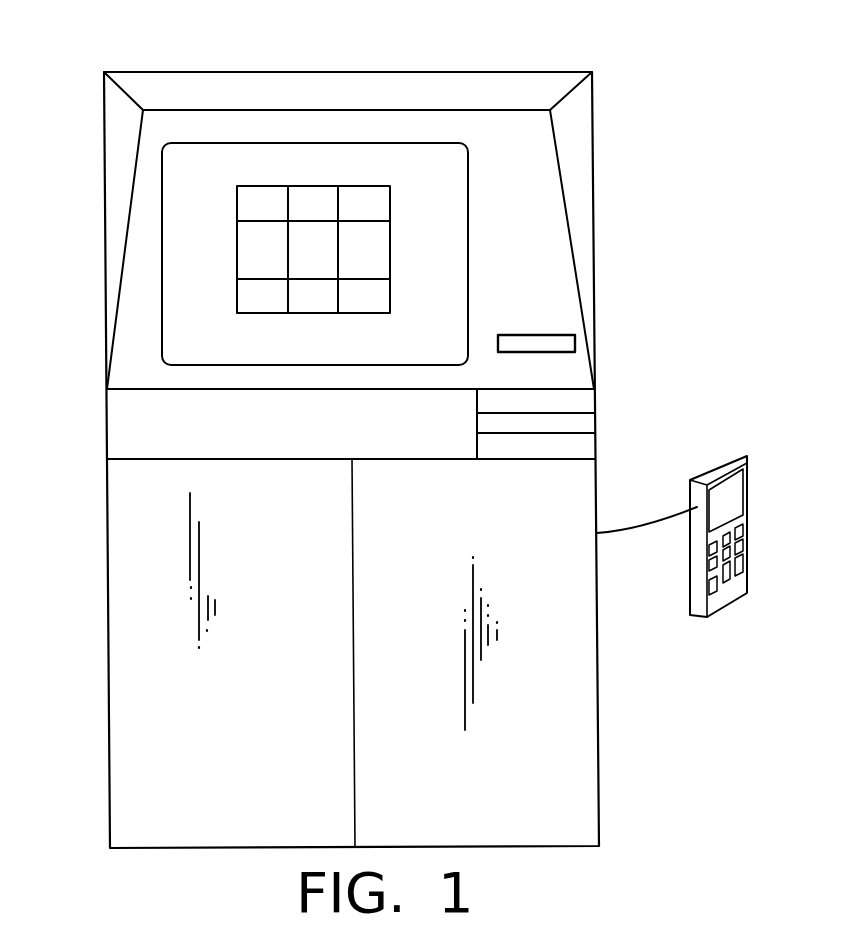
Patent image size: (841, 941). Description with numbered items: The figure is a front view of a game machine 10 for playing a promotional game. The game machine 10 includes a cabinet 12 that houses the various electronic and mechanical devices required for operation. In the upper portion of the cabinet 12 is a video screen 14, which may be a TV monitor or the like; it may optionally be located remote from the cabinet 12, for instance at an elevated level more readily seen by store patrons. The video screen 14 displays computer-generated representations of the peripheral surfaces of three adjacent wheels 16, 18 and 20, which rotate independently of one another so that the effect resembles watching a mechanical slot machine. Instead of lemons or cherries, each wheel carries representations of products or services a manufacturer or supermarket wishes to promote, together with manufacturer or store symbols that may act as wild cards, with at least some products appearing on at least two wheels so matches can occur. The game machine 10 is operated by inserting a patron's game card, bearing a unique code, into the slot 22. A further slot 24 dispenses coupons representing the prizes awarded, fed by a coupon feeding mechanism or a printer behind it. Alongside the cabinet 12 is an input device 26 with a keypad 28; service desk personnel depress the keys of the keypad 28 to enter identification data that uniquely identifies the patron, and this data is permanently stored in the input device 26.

The game machine 10 is at (108, 690).
The cabinet 12 is at (109, 810).
The video screen 14 is at (470, 263).
The wheel 16 is at (271, 185).
The wheel 18 is at (308, 185).
The wheel 20 is at (367, 185).
The slot 22 is at (523, 335).
The slot 24 is at (557, 413).
The input device 26 is at (708, 463).
The keypad 28 is at (748, 530).